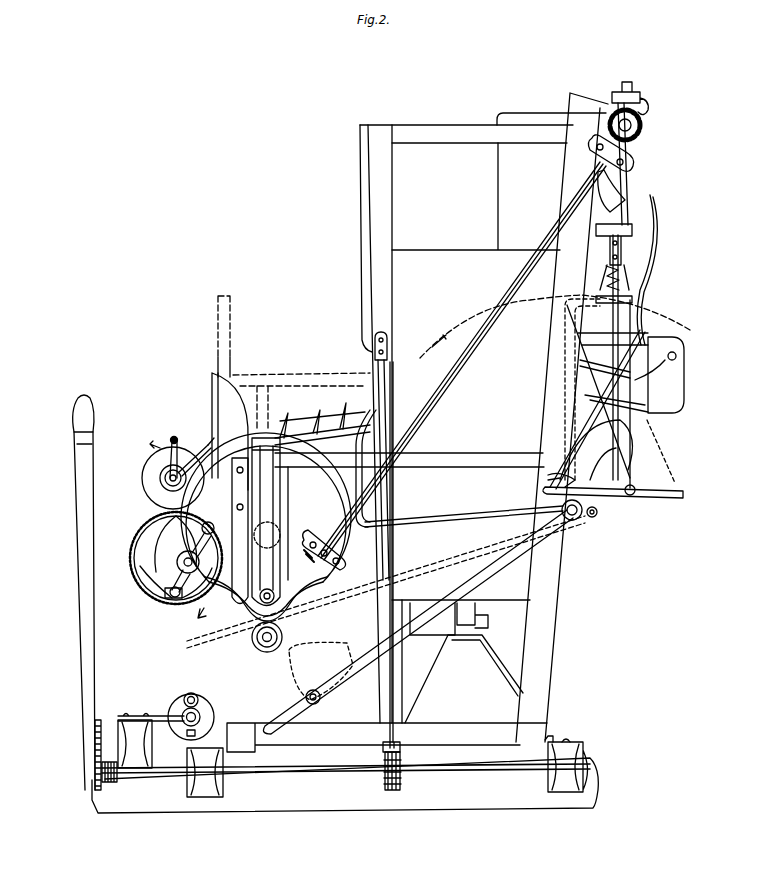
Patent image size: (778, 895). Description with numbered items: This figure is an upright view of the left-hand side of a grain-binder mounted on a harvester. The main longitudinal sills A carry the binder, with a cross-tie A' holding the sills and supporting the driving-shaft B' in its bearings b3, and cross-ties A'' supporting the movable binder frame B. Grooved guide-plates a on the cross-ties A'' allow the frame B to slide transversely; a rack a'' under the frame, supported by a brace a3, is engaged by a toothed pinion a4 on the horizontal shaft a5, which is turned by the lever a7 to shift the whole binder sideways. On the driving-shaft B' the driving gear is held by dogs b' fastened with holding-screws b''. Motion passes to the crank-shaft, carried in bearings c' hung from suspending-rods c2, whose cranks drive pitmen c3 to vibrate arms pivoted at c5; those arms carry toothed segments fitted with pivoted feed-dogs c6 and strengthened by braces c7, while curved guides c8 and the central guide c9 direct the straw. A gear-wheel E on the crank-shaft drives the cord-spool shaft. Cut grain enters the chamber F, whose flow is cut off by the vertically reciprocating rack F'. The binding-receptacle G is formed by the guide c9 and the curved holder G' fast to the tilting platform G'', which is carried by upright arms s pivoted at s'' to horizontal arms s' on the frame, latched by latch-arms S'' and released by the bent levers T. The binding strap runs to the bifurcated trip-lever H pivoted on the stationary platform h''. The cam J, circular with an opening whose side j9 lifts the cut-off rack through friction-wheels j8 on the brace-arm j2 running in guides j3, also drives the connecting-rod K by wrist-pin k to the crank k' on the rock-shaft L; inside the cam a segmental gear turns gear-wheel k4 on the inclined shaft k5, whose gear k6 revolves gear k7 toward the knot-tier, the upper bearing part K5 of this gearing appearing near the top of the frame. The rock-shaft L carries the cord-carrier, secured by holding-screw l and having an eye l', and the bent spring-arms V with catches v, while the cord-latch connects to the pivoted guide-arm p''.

The main longitudinal sills A is at (345, 785).
The cross-tie A' is at (170, 758).
The cross-ties A'' is at (568, 767).
The guide-plates a is at (557, 731).
The rack a'' is at (405, 560).
The supporting-brace a3 is at (389, 456).
The toothed pinion a4 is at (256, 755).
The horizontal shaft a5 is at (346, 777).
The lever a7 is at (91, 592).
The movable frame B is at (417, 422).
The driving-shaft B' is at (187, 716).
The movable heads or dogs b' is at (197, 702).
The holding-screws b'' is at (200, 732).
The bearings b3 is at (151, 710).
The bearings c' is at (192, 547).
The suspending-rods c2 is at (207, 432).
The pitmen or connecting-rods c3 is at (173, 585).
The pivot of vibrating arms c5 is at (318, 412).
The feed-dogs or teeth c6 is at (291, 431).
The braces c7 is at (166, 478).
The curved guides c8 is at (164, 450).
The guide c9 is at (194, 454).
The gear-wheel E is at (167, 558).
The chamber F is at (301, 397).
The cut-off rack F' is at (225, 336).
The binding-receptacle G is at (596, 450).
The curved holder G' is at (607, 453).
The tilting platform G'' is at (623, 495).
The bifurcated pivoted lever H is at (470, 620).
The stationary platform h'' is at (464, 678).
The cams J is at (383, 566).
The brace-arm j2 is at (266, 529).
The guides j3 is at (240, 531).
The friction-wheels j8 is at (273, 591).
The side of cam opening j9 is at (281, 557).
The connecting-rod K is at (418, 622).
The wrist-pins k is at (312, 689).
The crank k' is at (599, 512).
The gear-wheel k4 is at (321, 550).
The inclined shaft k5 is at (462, 361).
The bracket K5 is at (620, 180).
The gear-wheel k6 is at (634, 150).
The gear-wheel k7 is at (640, 128).
The rock-shaft L is at (572, 510).
The holding-screw l is at (597, 409).
The eye l' is at (661, 451).
The pivoted guide-arm p'' is at (631, 373).
The latch-arms S'' is at (557, 485).
The upright arms s is at (604, 397).
The horizontal arms s' is at (605, 365).
The pivot s'' is at (650, 370).
The upright bent levers T is at (647, 270).
The bent spring-arms V is at (464, 514).
The catches v is at (375, 468).